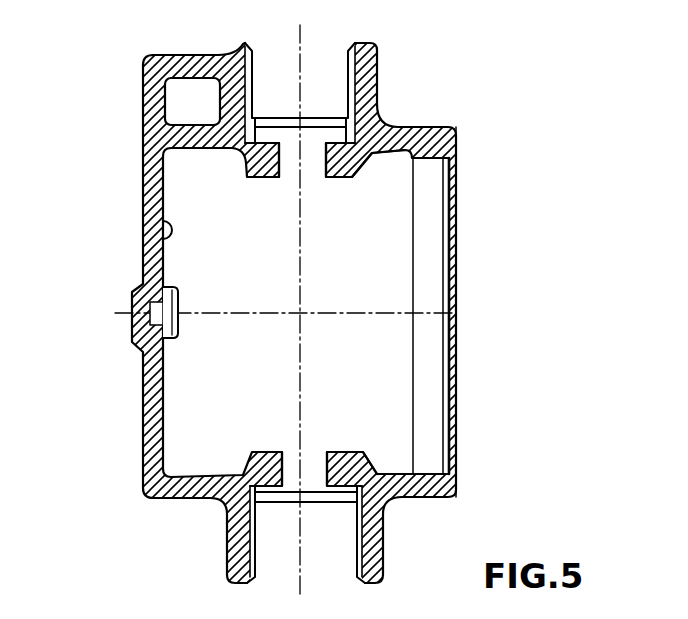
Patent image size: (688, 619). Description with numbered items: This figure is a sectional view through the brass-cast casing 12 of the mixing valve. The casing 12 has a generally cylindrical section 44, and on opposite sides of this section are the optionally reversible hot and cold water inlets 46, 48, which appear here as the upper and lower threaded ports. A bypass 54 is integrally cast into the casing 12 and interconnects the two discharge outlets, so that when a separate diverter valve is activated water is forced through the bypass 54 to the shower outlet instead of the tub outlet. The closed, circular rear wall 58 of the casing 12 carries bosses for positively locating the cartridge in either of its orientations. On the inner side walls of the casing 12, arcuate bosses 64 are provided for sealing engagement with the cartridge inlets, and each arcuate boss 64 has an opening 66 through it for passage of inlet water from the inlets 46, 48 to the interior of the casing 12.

The casing 12 is at (387, 43).
The generally cylindrical section 44 is at (422, 128).
The hot and cold water inlet 46 is at (229, 45).
The hot and cold water inlet 48 is at (227, 540).
The bypass 54 is at (188, 96).
The closed, circular rear wall 58 is at (165, 225).
The arcuate boss 64 is at (350, 178).
The opening 66 is at (307, 178).